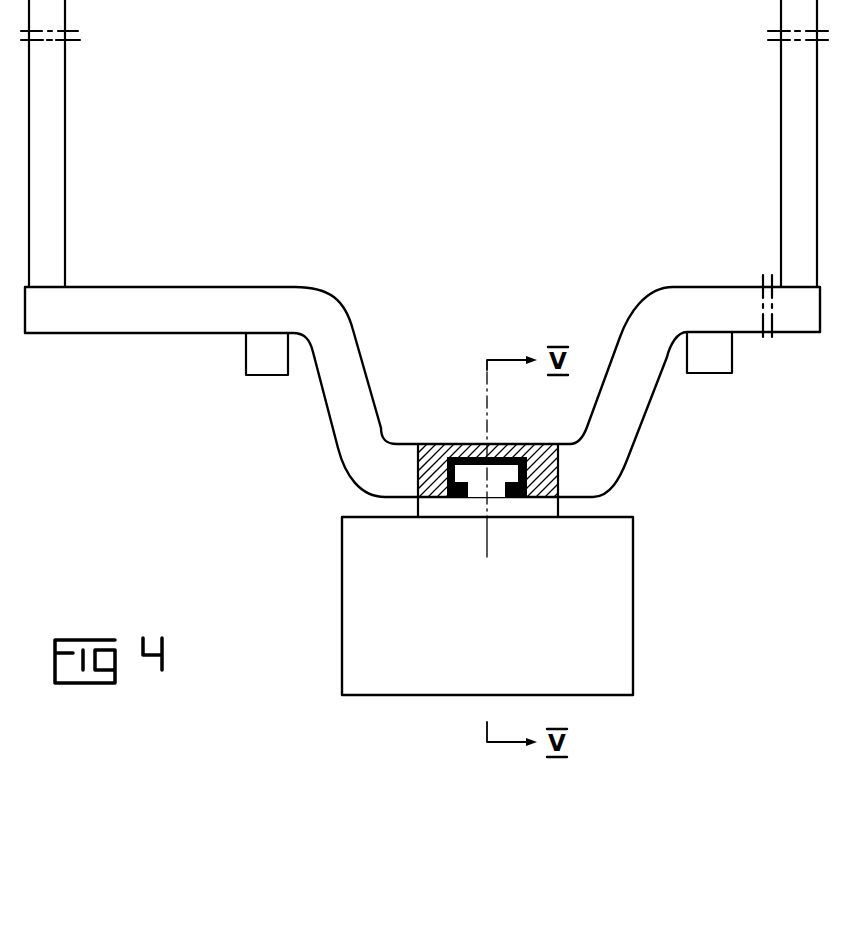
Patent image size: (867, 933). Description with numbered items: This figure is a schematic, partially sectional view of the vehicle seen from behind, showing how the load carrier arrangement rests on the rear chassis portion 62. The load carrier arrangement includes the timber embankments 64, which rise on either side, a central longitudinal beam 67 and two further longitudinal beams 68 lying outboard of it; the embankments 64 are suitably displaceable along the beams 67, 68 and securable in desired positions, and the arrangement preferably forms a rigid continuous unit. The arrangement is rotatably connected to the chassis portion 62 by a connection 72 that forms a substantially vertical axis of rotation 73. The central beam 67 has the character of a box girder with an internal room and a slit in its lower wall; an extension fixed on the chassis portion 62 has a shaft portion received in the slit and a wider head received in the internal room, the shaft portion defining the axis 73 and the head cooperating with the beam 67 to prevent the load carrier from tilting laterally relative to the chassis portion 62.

The rear chassis portion 62 is at (400, 666).
The timber embankments 64 is at (632, 413).
The central longitudinal beam 67 is at (427, 447).
The further longitudinal beams 68 is at (258, 358).
The connection 72 is at (517, 443).
The vertical axis of rotation 73 is at (485, 420).